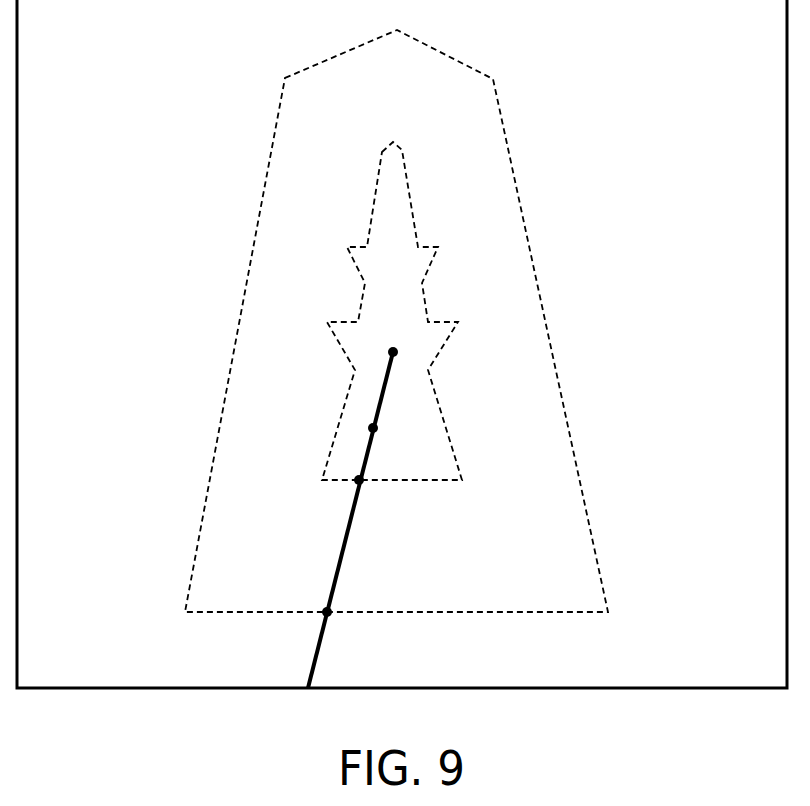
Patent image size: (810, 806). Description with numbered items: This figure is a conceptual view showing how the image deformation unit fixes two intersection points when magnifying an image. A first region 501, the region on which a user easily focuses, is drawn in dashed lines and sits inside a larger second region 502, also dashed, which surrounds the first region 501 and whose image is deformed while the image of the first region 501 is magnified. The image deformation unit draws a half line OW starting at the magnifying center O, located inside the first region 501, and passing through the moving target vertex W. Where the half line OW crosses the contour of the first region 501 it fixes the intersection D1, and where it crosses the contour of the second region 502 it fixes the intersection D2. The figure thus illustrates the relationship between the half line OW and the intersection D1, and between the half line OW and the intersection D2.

The second region 502 is at (267, 137).
The first region 501 is at (378, 177).
The half line OW is at (338, 567).
The magnifying center O is at (393, 352).
The moving target vertex W is at (373, 428).
The intersection D1 is at (359, 480).
The intersection D2 is at (327, 612).